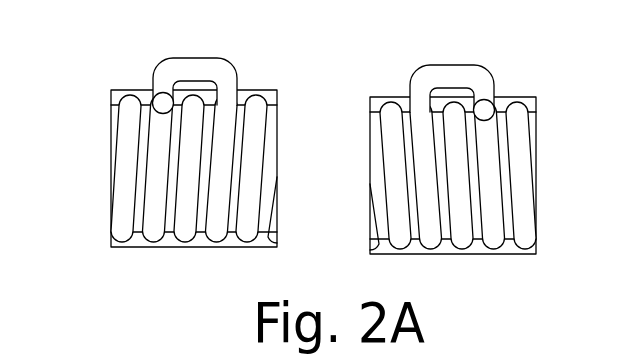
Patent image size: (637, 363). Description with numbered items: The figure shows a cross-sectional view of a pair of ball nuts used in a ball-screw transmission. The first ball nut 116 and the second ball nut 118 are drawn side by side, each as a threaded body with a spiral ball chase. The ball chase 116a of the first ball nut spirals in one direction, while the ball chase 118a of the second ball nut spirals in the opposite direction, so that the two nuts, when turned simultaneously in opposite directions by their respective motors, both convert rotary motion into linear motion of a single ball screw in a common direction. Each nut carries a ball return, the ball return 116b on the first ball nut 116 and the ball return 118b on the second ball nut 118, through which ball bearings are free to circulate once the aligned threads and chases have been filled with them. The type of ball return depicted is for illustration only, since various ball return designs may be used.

The first ball nut 116 is at (113, 90).
The ball chase 116a is at (122, 213).
The ball return 116b is at (250, 43).
The second ball nut 118 is at (528, 96).
The ball chase 118a is at (523, 200).
The ball return 118b is at (421, 73).